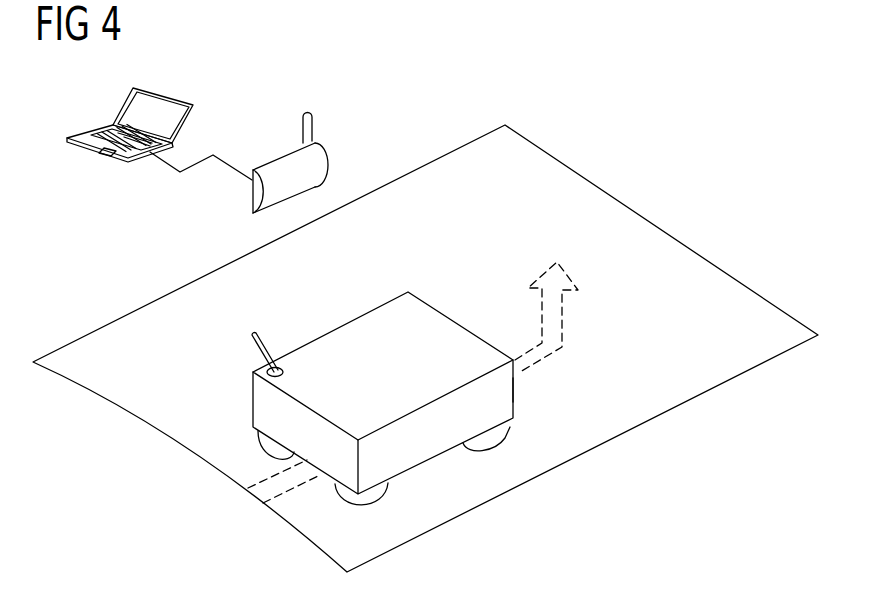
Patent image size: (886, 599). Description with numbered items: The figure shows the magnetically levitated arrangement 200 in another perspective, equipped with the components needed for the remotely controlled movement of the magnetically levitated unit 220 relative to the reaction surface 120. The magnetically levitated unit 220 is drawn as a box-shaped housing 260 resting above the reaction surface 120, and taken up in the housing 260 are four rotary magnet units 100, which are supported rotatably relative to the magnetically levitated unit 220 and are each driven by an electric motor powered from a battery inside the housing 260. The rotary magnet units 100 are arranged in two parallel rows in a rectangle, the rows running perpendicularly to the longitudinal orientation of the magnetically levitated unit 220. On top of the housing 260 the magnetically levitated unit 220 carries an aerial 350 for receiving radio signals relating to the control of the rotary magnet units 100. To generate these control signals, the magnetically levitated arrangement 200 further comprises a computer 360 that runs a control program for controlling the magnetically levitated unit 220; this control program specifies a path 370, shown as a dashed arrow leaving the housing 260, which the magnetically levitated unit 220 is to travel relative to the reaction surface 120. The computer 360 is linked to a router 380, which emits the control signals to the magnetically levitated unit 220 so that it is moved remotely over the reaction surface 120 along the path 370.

The rotary magnet unit 100 is at (498, 446).
The reaction surface 120 is at (734, 291).
The magnetically levitated arrangement 200 is at (425, 308).
The magnetically levitated unit 220 is at (398, 370).
The housing 260 is at (538, 392).
The aerial 350 is at (250, 336).
The computer 360 is at (200, 84).
The path 370 is at (569, 274).
The router 380 is at (352, 127).